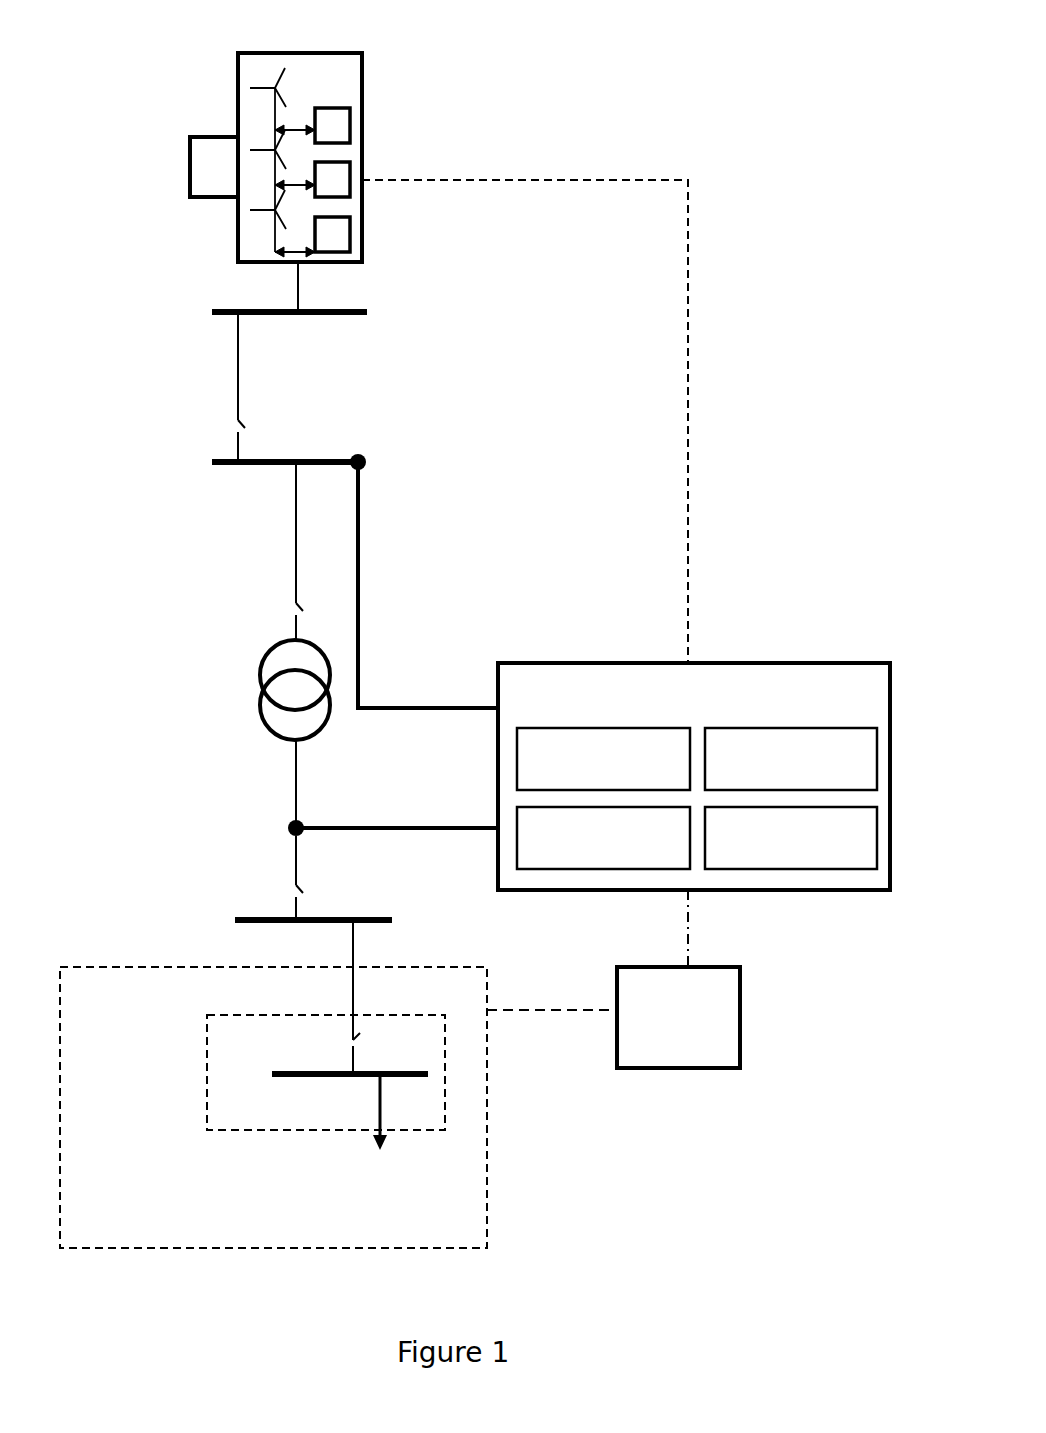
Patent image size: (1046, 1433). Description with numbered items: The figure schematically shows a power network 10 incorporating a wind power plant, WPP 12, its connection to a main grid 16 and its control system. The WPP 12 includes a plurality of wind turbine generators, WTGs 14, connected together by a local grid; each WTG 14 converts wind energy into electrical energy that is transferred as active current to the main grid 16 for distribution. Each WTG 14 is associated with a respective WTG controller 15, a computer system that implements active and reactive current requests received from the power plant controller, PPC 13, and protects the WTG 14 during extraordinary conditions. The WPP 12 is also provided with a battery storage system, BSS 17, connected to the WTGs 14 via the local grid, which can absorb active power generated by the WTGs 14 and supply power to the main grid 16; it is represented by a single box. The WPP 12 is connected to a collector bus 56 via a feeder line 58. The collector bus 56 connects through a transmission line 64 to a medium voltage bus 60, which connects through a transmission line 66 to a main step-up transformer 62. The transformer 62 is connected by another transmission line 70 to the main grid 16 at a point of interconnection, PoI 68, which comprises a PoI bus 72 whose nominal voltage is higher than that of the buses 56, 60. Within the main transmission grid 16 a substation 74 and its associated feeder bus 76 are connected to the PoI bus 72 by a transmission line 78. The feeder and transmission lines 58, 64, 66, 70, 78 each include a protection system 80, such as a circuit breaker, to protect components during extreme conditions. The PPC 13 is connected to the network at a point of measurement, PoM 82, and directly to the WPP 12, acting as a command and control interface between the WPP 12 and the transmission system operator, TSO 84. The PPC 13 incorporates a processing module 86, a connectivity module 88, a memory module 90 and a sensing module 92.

The power network 10 is at (680, 134).
The wind power plant 12 is at (363, 72).
The power plant controller 13 is at (778, 663).
The wind turbine generators 14 is at (268, 75).
The WTG controller 15 is at (350, 118).
The main grid 16 is at (93, 967).
The battery storage system 17 is at (190, 167).
The collector bus 56 is at (355, 303).
The feeder line 58 is at (300, 290).
The medium voltage bus 60 is at (212, 470).
The main step-up transformer 62 is at (262, 668).
The transmission line 64 is at (240, 358).
The transmission line 66 is at (296, 530).
The point of interconnection 68 is at (243, 915).
The transmission line 70 is at (298, 782).
The PoI bus 72 is at (380, 915).
The substation 74 is at (207, 1060).
The feeder bus 76 is at (382, 1072).
The transmission line 78 is at (357, 945).
The protection system 80 is at (242, 425).
The point of measurement 82 is at (288, 826).
The transmission system operator 84 is at (678, 1068).
The processing module 86 is at (556, 728).
The connectivity module 88 is at (780, 728).
The memory module 90 is at (585, 869).
The sensing module 92 is at (880, 850).